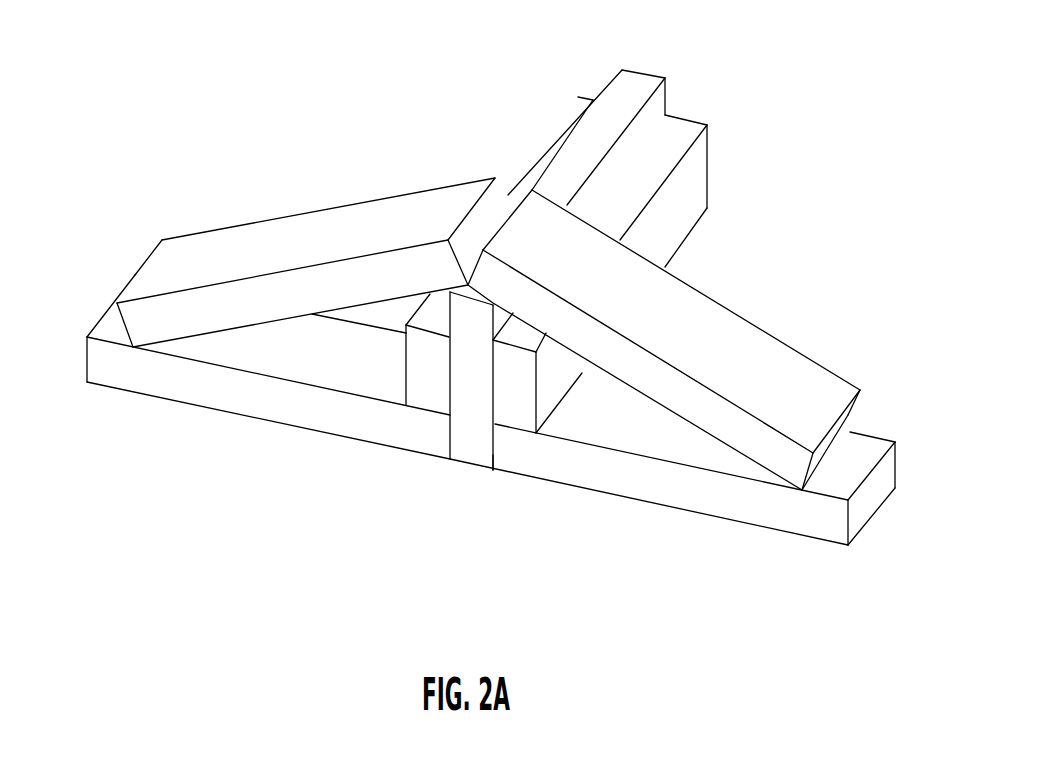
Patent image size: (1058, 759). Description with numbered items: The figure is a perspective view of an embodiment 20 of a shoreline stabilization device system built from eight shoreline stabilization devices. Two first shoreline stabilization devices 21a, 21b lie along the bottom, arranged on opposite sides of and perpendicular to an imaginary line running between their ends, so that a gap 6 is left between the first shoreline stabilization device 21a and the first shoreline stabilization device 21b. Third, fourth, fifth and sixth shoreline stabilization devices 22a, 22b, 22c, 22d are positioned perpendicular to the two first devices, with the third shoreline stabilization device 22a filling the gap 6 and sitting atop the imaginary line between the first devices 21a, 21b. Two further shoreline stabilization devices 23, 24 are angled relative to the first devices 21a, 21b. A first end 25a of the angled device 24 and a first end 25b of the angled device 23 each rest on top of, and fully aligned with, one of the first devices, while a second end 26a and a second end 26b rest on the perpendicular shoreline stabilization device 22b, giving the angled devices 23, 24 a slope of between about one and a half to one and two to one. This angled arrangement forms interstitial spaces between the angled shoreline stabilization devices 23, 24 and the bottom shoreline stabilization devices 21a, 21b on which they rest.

The shoreline stabilization device system 20 is at (398, 59).
The first shoreline stabilization device 21a is at (195, 350).
The first shoreline stabilization device 21b is at (845, 487).
The third shoreline stabilization device 22a is at (460, 428).
The fourth shoreline stabilization device 22b is at (475, 343).
The fifth shoreline stabilization device 22c is at (425, 395).
The sixth shoreline stabilization device 22d is at (538, 393).
The angled shoreline stabilization device 23 is at (185, 253).
The angled shoreline stabilization device 24 is at (790, 362).
The first end 25a is at (857, 415).
The first end 25b is at (132, 278).
The second end 26a is at (497, 228).
The second end 26b is at (475, 223).
The gap 6 is at (500, 452).